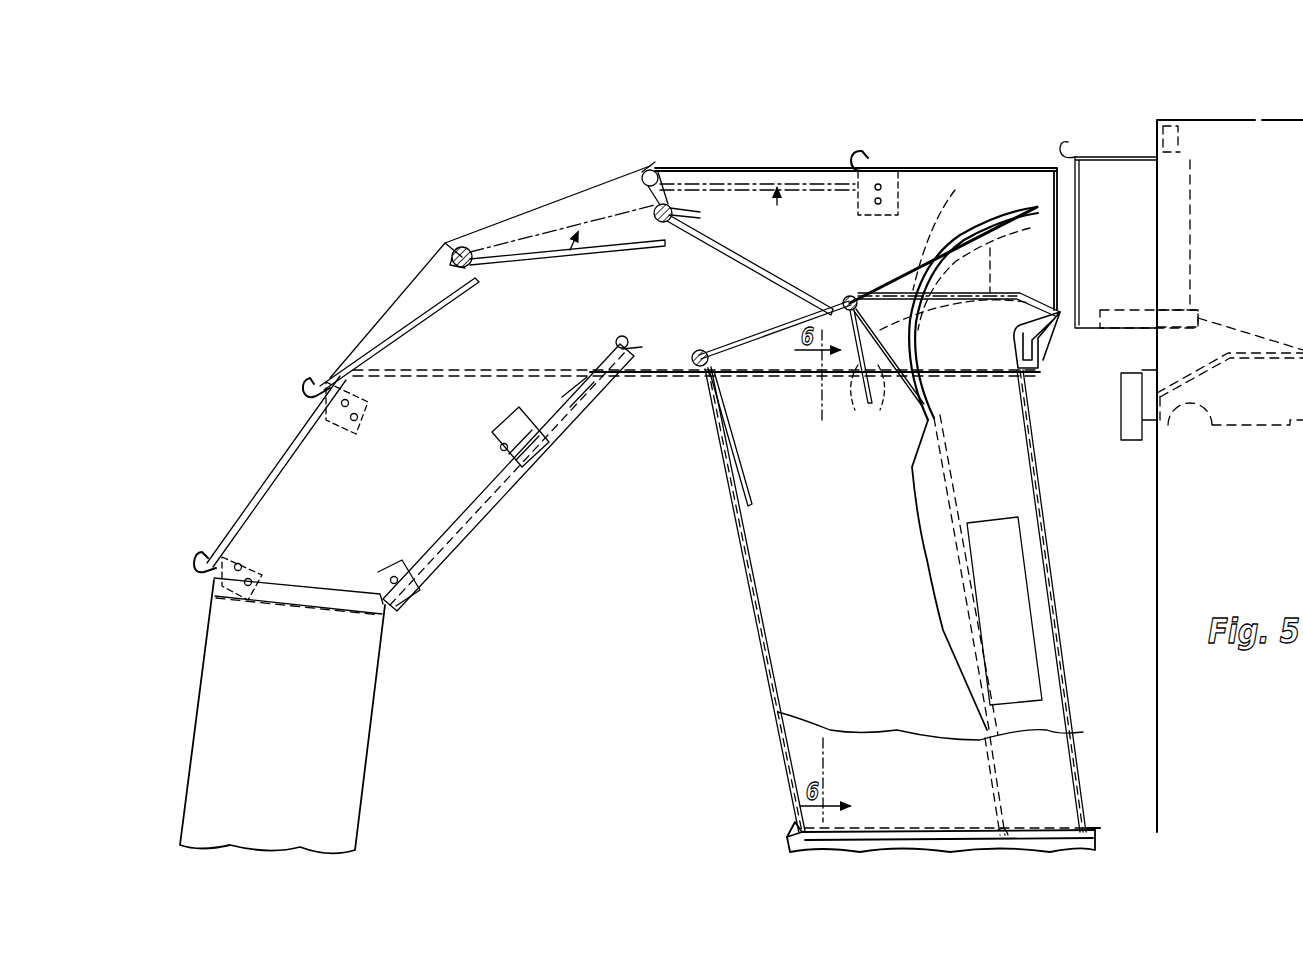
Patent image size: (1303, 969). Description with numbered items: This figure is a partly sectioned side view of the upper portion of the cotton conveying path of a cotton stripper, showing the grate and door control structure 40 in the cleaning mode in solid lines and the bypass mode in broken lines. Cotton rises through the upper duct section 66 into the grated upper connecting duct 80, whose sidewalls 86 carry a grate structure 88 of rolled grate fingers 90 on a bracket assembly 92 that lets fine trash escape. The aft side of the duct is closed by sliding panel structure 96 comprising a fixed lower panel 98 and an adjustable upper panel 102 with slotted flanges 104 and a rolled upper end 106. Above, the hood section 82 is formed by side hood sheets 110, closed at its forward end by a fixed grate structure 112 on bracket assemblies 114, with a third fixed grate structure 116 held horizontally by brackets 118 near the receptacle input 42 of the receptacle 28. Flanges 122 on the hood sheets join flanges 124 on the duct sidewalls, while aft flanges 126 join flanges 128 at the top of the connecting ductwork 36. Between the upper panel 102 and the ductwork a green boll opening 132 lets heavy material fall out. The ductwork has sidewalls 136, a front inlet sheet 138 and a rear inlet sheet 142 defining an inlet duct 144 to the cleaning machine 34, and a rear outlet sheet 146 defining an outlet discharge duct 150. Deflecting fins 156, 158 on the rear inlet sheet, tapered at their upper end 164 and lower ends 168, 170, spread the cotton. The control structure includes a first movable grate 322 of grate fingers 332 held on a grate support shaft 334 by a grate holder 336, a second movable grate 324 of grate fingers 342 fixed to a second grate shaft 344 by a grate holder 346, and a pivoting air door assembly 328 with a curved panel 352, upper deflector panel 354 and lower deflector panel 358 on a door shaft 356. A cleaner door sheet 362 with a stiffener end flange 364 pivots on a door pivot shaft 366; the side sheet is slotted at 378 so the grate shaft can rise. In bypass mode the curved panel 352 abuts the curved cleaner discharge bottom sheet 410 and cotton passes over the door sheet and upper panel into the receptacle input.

The receptacle 28 is at (1183, 120).
The cleaning machine 34 is at (785, 838).
The connecting ductwork 36 is at (738, 602).
The grate and door control structure 40 is at (753, 150).
The receptacle input 42 is at (1125, 157).
The upper duct section 66 is at (205, 660).
The grated upper connecting duct 80 is at (248, 458).
The hood section 82 is at (438, 226).
The sidewalls 86 is at (298, 563).
The grate structure 88 is at (210, 545).
The grate fingers 90 is at (1020, 168).
The bracket assembly 92 is at (214, 580).
The sliding panel structure 96 is at (528, 462).
The lower panel 98 is at (420, 565).
The upper panel 102 is at (550, 432).
The slotted flanges 104 is at (578, 402).
The rolled upper end 106 is at (628, 355).
The side hood sheets 110 is at (588, 195).
The fixed grate structure 112 is at (327, 378).
The bracket assemblies 114 is at (336, 400).
The third fixed grate structure 116 is at (882, 170).
The brackets 118 is at (872, 158).
The flanges 122 is at (530, 370).
The flanges 124 is at (420, 378).
The flanges 126 is at (996, 362).
The flanges 128 is at (960, 377).
The green boll opening 132 is at (660, 345).
The sidewalls 136 is at (759, 600).
The front inlet sheet 138 is at (770, 672).
The rear inlet sheet 142 is at (988, 772).
The inlet duct 144 is at (752, 350).
The rear outlet sheet 146 is at (1052, 574).
The outlet discharge duct 150 is at (1012, 438).
The outermost deflecting fins 156 is at (928, 572).
The inner deflecting fins 158 is at (945, 625).
The tapered upper end 164 is at (913, 450).
The tapered lower end 168 is at (960, 675).
The tapered lower end 170 is at (960, 662).
The first movable grate 322 is at (757, 205).
The second movable grate 324 is at (620, 252).
The pivoting air door assembly 328 is at (912, 246).
The grate fingers 332 is at (745, 253).
The grate support shaft 334 is at (664, 224).
The grate holder 336 is at (690, 213).
The grate fingers 342 is at (525, 265).
The second grate shaft 344 is at (470, 248).
The grate holder 346 is at (447, 254).
The rearwardly curved panel 352 is at (985, 258).
The upper deflector panel 354 is at (957, 192).
The door shaft 356 is at (848, 294).
The lower deflector panel 358 is at (876, 398).
The cleaner door sheet 362 is at (745, 385).
The stiffener end flange 364 is at (752, 510).
The door pivot shaft 366 is at (695, 372).
The slot 378 is at (665, 200).
The curved cleaner discharge bottom sheet 410 is at (1045, 346).